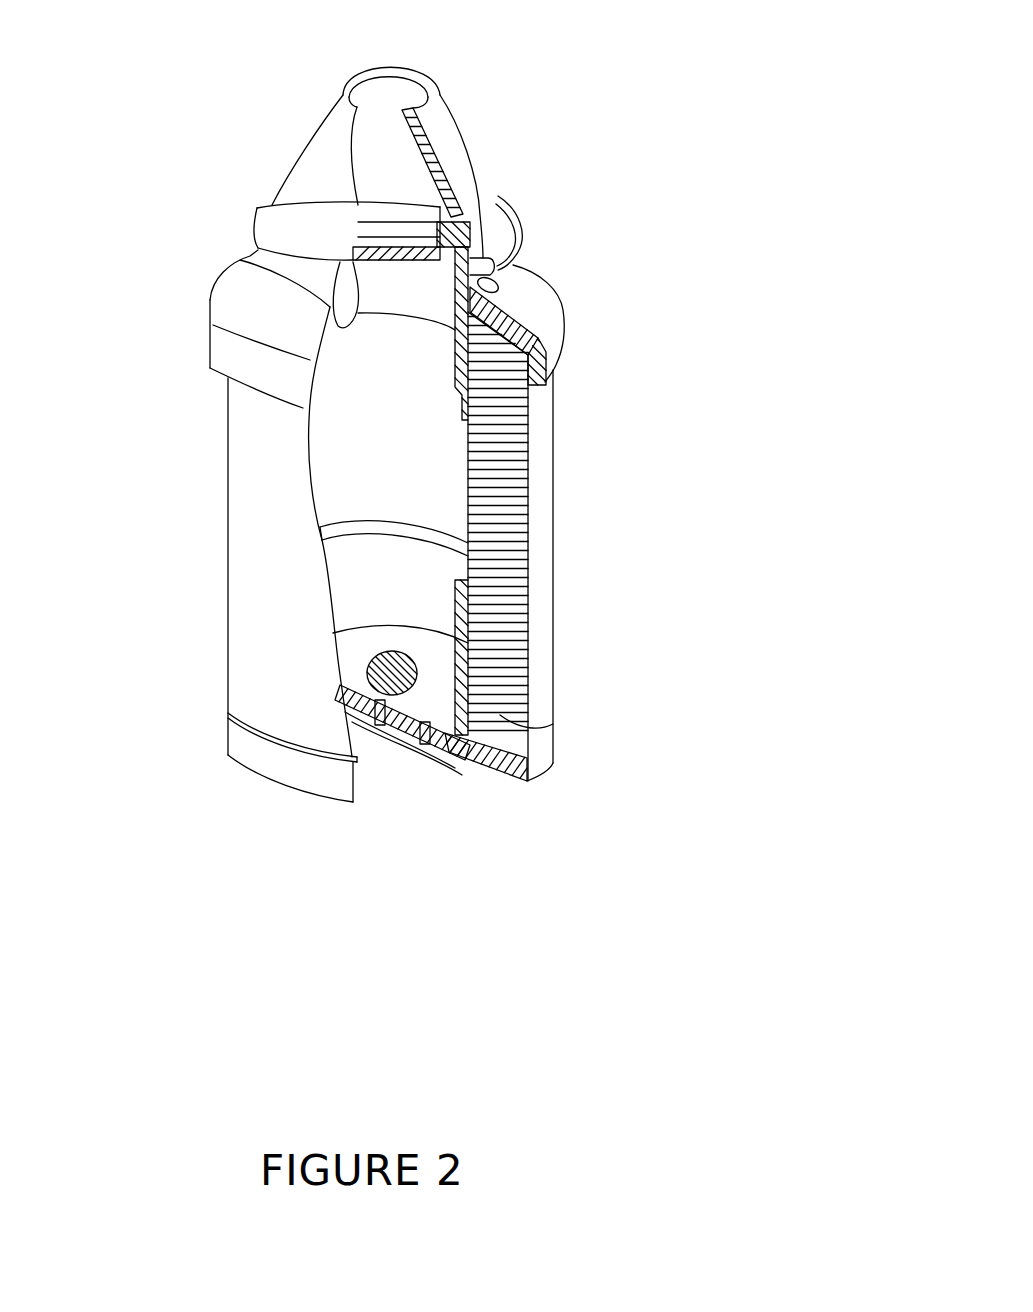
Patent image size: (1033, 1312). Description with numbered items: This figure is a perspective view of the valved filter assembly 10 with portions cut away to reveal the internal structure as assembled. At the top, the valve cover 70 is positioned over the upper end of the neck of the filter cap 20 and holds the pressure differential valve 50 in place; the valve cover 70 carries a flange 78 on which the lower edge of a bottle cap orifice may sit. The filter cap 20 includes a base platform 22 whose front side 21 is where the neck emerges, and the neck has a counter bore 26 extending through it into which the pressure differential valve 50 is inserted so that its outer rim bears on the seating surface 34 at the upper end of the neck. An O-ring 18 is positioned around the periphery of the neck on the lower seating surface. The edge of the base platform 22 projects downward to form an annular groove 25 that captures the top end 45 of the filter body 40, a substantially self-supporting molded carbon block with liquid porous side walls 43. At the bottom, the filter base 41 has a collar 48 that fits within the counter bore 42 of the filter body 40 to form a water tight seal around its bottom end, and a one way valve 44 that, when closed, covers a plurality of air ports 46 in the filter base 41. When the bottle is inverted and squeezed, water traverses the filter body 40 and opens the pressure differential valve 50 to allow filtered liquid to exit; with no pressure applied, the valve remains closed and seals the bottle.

The valved filter assembly 10 is at (706, 100).
The O-ring 18 is at (517, 268).
The filter cap 20 is at (200, 268).
The front side 21 is at (257, 323).
The base platform 22 is at (537, 383).
The annular groove 25 is at (548, 360).
The counter bore 26 is at (376, 263).
The seating surface 34 is at (455, 216).
The filter body 40 is at (568, 535).
The filter base 41 is at (560, 777).
The counter bore 42 is at (388, 532).
The liquid porous side walls 43 is at (553, 723).
The one way valve 44 is at (370, 738).
The top end 45 is at (470, 405).
The air ports 46 is at (430, 752).
The collar 48 is at (343, 520).
The pressure differential valve 50 is at (337, 313).
The valve cover 70 is at (468, 116).
The flange 78 is at (260, 213).